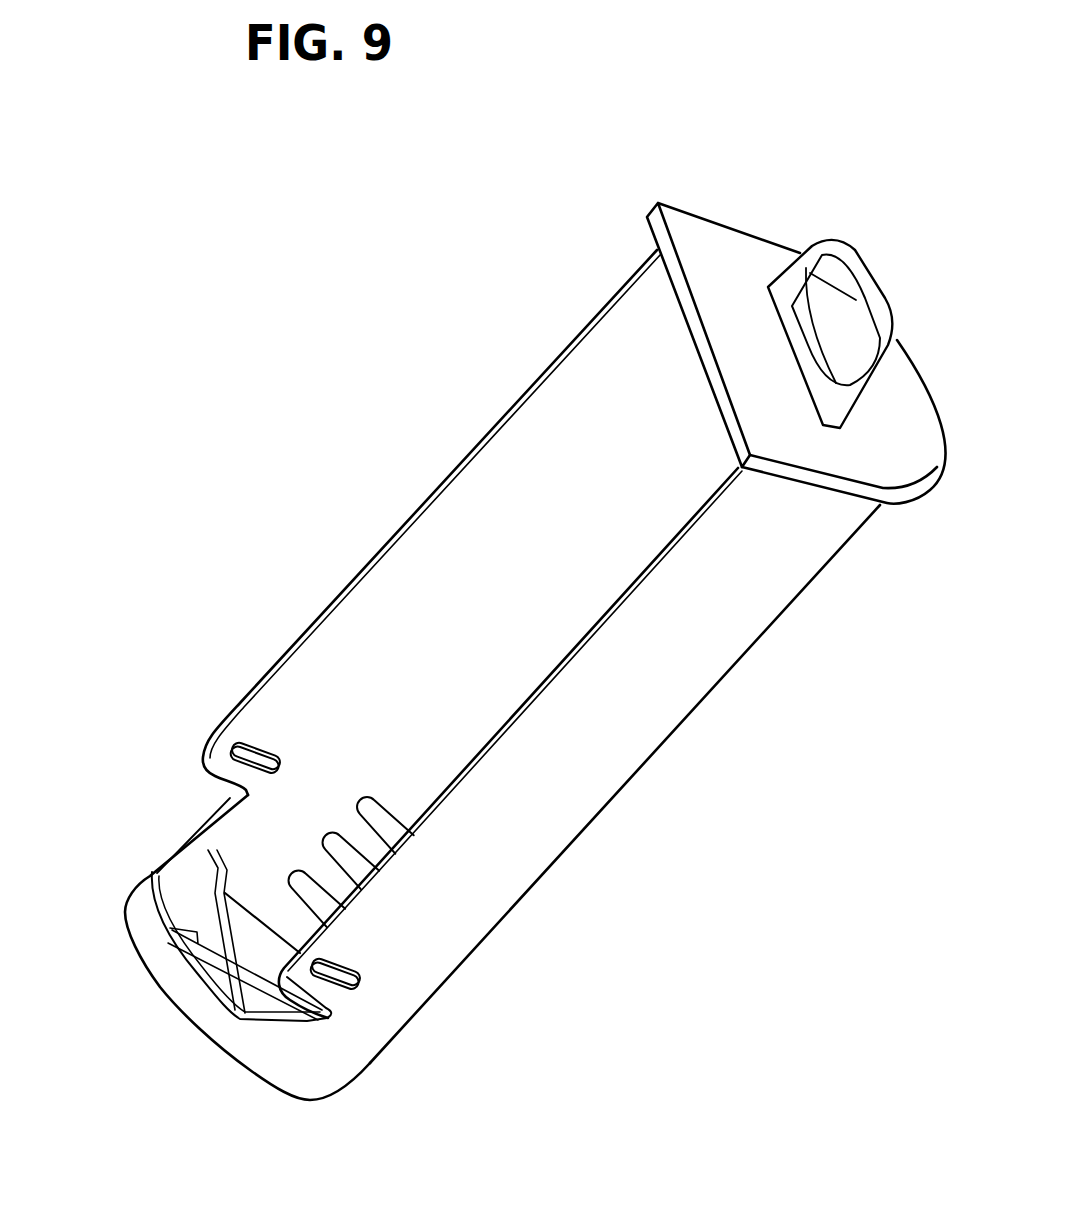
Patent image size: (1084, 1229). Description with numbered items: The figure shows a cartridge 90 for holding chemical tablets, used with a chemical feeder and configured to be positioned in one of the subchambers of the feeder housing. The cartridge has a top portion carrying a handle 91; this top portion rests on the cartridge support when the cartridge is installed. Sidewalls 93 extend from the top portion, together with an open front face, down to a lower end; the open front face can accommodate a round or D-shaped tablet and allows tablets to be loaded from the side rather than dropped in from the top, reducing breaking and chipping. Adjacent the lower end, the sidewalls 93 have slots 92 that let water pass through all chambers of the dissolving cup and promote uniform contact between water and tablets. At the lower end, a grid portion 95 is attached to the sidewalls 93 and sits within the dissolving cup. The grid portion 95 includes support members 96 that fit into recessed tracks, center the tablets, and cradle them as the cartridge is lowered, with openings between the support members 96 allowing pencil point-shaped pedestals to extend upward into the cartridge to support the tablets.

The cartridge 90 is at (412, 457).
The handle 91 is at (872, 277).
The slots 92 is at (370, 797).
The sidewalls 93 is at (718, 643).
The grid portion 95 is at (150, 1003).
The support members 96 is at (230, 913).